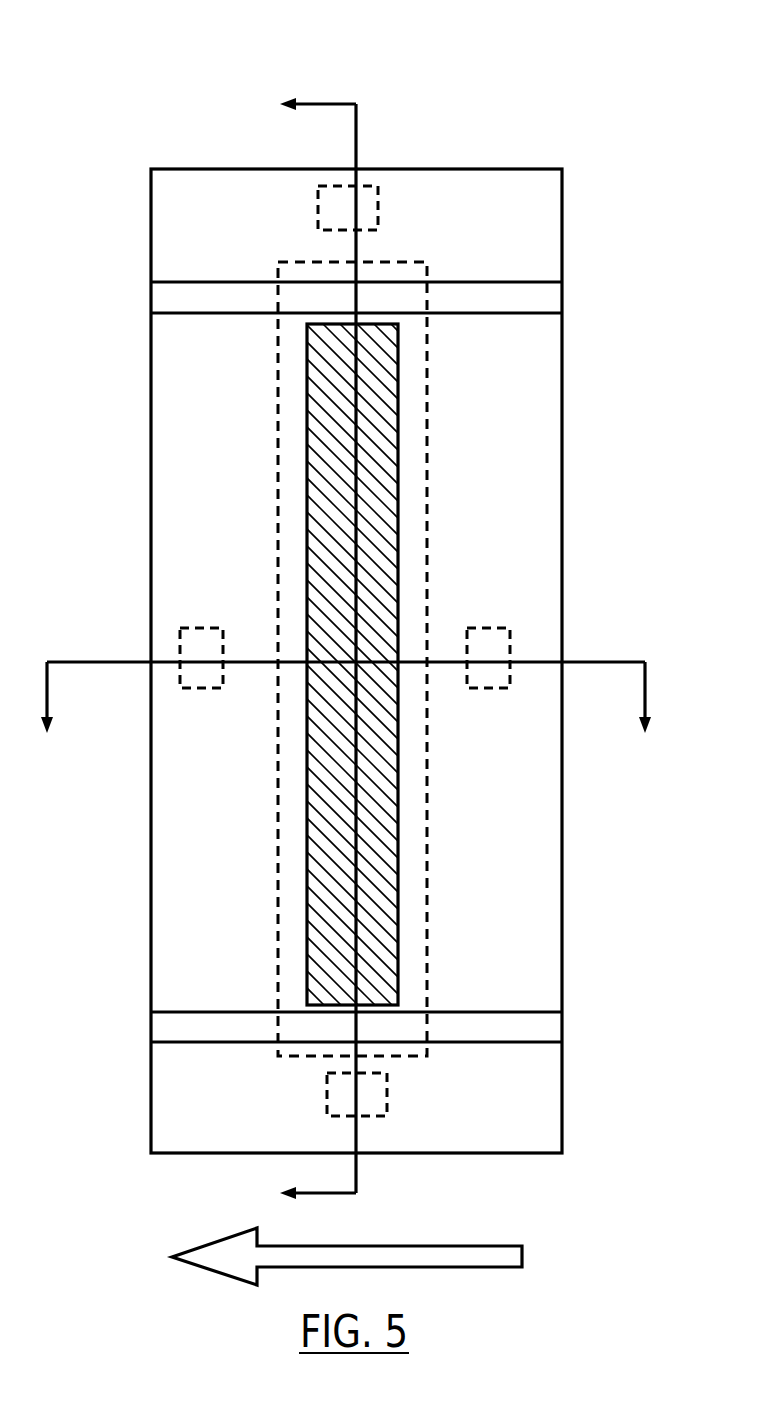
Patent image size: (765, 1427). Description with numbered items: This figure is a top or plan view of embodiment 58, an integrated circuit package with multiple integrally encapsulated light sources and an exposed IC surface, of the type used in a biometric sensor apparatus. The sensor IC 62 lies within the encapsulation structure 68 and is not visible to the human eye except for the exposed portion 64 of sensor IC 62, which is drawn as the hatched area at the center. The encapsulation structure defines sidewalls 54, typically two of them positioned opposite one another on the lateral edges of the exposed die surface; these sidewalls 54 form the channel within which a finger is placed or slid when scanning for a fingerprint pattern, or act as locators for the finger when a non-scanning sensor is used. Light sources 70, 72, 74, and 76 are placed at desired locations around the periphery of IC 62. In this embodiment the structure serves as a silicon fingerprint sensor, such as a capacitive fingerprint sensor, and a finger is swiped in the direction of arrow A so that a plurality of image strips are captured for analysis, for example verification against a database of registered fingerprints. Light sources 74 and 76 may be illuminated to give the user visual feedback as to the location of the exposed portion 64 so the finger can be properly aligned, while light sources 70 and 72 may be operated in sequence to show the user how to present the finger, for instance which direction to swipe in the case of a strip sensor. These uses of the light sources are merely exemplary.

The embodiment 58 is at (483, 83).
The sidewalls 54 is at (173, 298).
The sensor IC 62 is at (427, 452).
The exposed portion 64 is at (327, 528).
The encapsulation structure 68 is at (175, 859).
The light source 70 is at (205, 640).
The light source 72 is at (505, 640).
The light source 74 is at (372, 185).
The light source 76 is at (365, 1117).